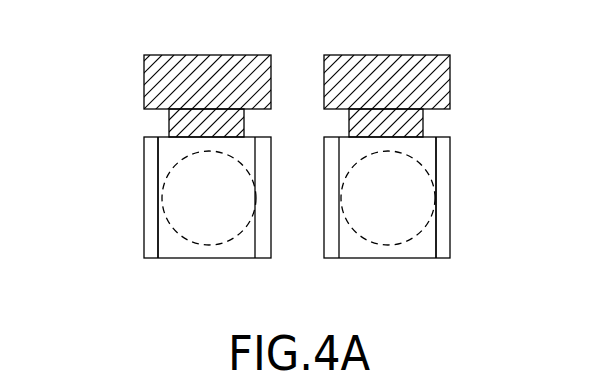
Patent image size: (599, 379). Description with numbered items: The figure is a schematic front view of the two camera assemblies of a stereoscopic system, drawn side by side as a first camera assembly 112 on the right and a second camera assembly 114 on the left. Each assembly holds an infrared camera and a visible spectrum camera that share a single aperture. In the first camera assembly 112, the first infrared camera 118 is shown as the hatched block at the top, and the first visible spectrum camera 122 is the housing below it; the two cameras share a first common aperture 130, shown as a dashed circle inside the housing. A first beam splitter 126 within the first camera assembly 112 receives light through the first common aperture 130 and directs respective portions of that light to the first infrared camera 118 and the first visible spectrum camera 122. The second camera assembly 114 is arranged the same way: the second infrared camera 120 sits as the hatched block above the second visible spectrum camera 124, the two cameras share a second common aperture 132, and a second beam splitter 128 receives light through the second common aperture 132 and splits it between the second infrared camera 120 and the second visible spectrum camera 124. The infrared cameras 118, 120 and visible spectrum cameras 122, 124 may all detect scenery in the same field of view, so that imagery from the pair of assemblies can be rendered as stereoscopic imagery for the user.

The first camera assembly 112 is at (396, 135).
The second camera assembly 114 is at (194, 136).
The first infrared camera 118 is at (450, 82).
The second infrared camera 120 is at (144, 80).
The first visible spectrum camera 122 is at (450, 198).
The second visible spectrum camera 124 is at (144, 198).
The first beam splitter 126 is at (425, 153).
The second beam splitter 128 is at (166, 155).
The first common aperture 130 is at (418, 233).
The second common aperture 132 is at (170, 228).